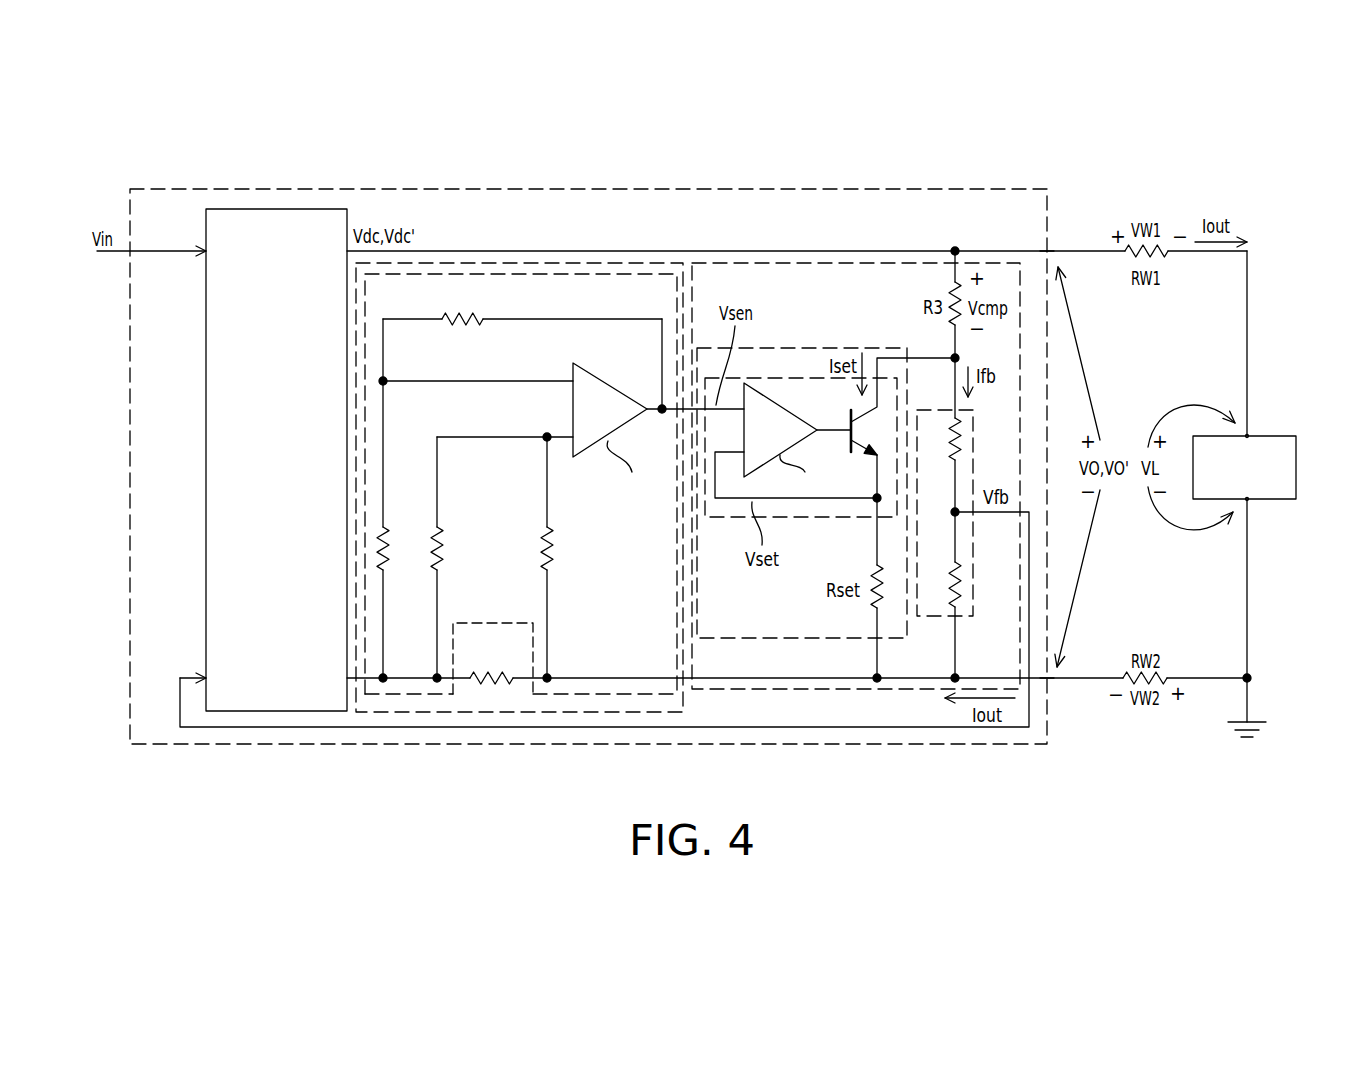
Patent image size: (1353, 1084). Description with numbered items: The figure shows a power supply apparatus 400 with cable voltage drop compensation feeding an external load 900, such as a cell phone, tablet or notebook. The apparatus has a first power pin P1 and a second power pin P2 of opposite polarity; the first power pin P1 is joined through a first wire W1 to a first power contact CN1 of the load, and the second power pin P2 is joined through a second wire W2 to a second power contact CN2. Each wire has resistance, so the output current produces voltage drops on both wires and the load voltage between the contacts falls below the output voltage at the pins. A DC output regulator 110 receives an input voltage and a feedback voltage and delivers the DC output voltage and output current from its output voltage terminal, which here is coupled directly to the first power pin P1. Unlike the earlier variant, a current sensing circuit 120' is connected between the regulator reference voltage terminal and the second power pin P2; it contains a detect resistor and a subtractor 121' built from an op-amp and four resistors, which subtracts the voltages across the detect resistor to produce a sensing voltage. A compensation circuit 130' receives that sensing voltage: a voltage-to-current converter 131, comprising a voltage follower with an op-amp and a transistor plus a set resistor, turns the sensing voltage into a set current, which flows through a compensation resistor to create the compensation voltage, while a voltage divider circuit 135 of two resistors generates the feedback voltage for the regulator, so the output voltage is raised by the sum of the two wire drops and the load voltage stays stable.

The DC output regulator 110 is at (277, 209).
The current sensing circuit 120' is at (519, 531).
The amplifier circuit 121' is at (554, 533).
The compensation circuit 130' is at (856, 413).
The voltage-to-current converter 131 is at (743, 640).
The voltage divider circuit 135 is at (940, 617).
The power supply apparatus 400 is at (993, 745).
The external load 900 is at (1270, 436).
The first power pin P1 is at (1047, 252).
The second power pin P2 is at (1046, 683).
The first wire W1 is at (1247, 305).
The second wire W2 is at (1214, 683).
The first power contact CN1 is at (1248, 434).
The second power contact CN2 is at (1248, 501).